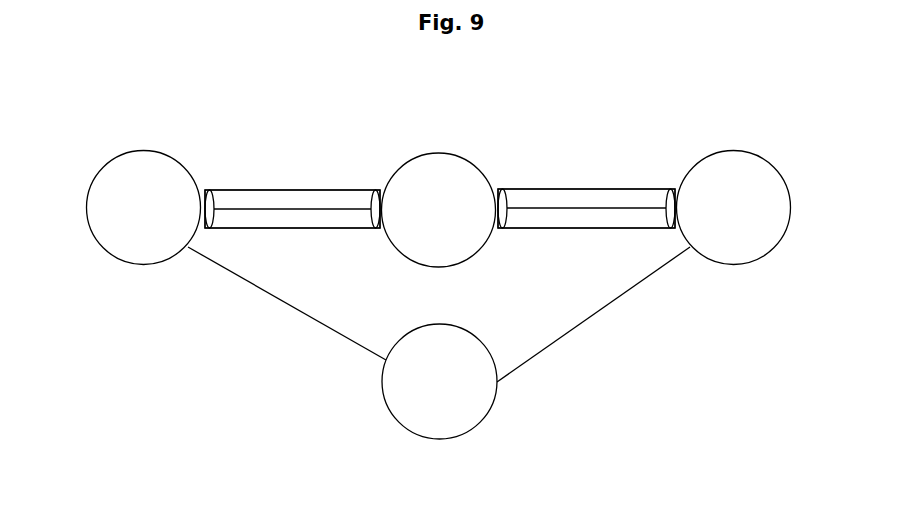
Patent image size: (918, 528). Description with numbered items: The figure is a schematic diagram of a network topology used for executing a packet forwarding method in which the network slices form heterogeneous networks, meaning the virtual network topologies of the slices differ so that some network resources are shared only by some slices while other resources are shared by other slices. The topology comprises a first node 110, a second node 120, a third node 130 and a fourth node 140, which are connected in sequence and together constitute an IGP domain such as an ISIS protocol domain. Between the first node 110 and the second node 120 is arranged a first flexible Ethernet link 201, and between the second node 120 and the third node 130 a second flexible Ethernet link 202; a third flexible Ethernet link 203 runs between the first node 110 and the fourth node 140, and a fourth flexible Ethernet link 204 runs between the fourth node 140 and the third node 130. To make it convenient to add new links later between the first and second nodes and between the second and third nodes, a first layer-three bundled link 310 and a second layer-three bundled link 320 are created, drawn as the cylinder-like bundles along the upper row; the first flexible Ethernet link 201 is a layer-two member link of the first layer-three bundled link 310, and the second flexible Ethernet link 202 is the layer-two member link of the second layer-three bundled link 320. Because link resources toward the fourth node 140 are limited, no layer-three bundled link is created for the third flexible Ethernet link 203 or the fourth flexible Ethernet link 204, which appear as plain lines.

The first node 110 is at (138, 150).
The second node 120 is at (442, 153).
The third node 130 is at (748, 151).
The fourth node 140 is at (460, 437).
The first flexible Ethernet link 201 is at (292, 209).
The second flexible Ethernet link 202 is at (586, 208).
The third flexible Ethernet link 203 is at (287, 303).
The fourth flexible Ethernet link 204 is at (593, 314).
The first layer-3 bundled link 310 is at (313, 190).
The second layer-3 bundled link 320 is at (617, 189).